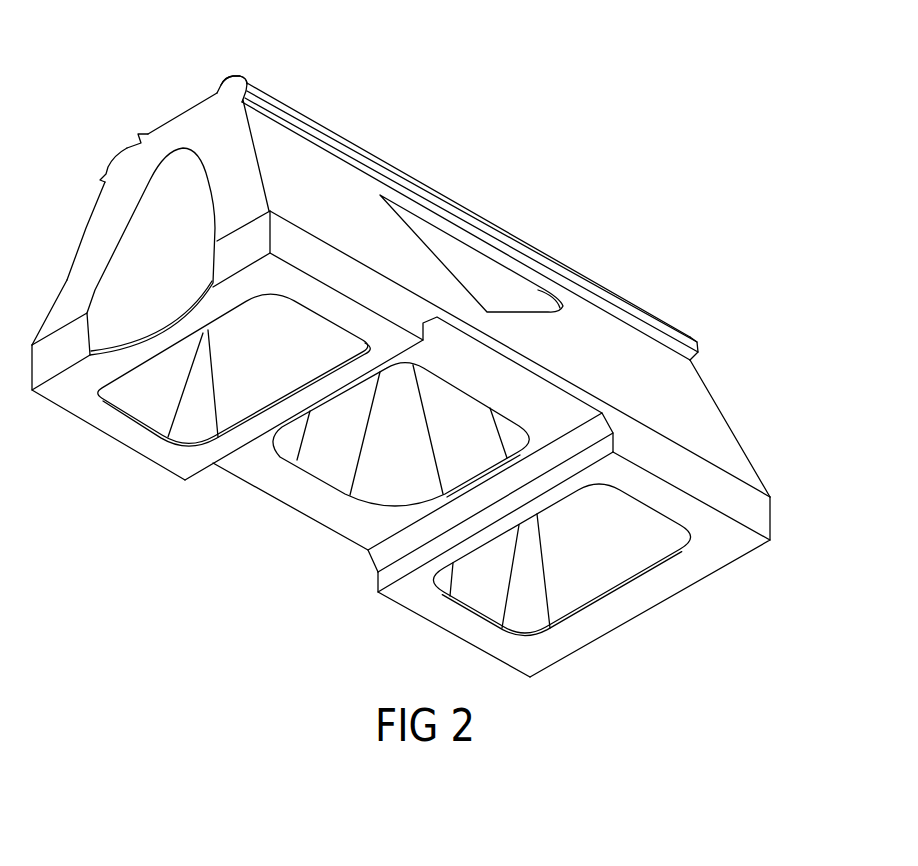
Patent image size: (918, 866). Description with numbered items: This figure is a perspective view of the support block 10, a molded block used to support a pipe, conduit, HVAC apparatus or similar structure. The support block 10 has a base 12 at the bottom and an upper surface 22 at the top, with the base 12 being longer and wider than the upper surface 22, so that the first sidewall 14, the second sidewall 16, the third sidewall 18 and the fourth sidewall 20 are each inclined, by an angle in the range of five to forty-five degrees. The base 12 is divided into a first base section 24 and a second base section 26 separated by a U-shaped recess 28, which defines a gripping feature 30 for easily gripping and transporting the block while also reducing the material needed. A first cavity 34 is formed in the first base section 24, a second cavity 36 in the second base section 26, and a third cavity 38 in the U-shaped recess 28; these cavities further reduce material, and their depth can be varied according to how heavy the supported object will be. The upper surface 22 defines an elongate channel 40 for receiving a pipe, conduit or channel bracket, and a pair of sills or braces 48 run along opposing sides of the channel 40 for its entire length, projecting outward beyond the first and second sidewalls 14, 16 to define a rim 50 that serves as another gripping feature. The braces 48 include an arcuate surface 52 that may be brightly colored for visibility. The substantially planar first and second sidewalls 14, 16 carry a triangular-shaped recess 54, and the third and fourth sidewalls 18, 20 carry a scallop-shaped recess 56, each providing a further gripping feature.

The support block 10 is at (556, 116).
The base 12 is at (780, 518).
The first sidewall 14 is at (680, 395).
The second sidewall 16 is at (102, 197).
The third sidewall 18 is at (730, 434).
The fourth sidewall 20 is at (88, 263).
The upper surface 22 is at (232, 73).
The first base section 24 is at (483, 633).
The second base section 26 is at (140, 395).
The U-shaped recess 28 is at (302, 493).
The gripping feature 30 is at (248, 490).
The first cavity 34 is at (620, 550).
The second cavity 36 is at (92, 408).
The third cavity 38 is at (400, 483).
The elongate channel 40 is at (176, 118).
The braces 48 is at (240, 90).
The rim 50 is at (312, 138).
The arcuate surface 52 is at (125, 143).
The triangular-shaped recess 54 is at (471, 253).
The scallop-shaped recess 56 is at (151, 251).